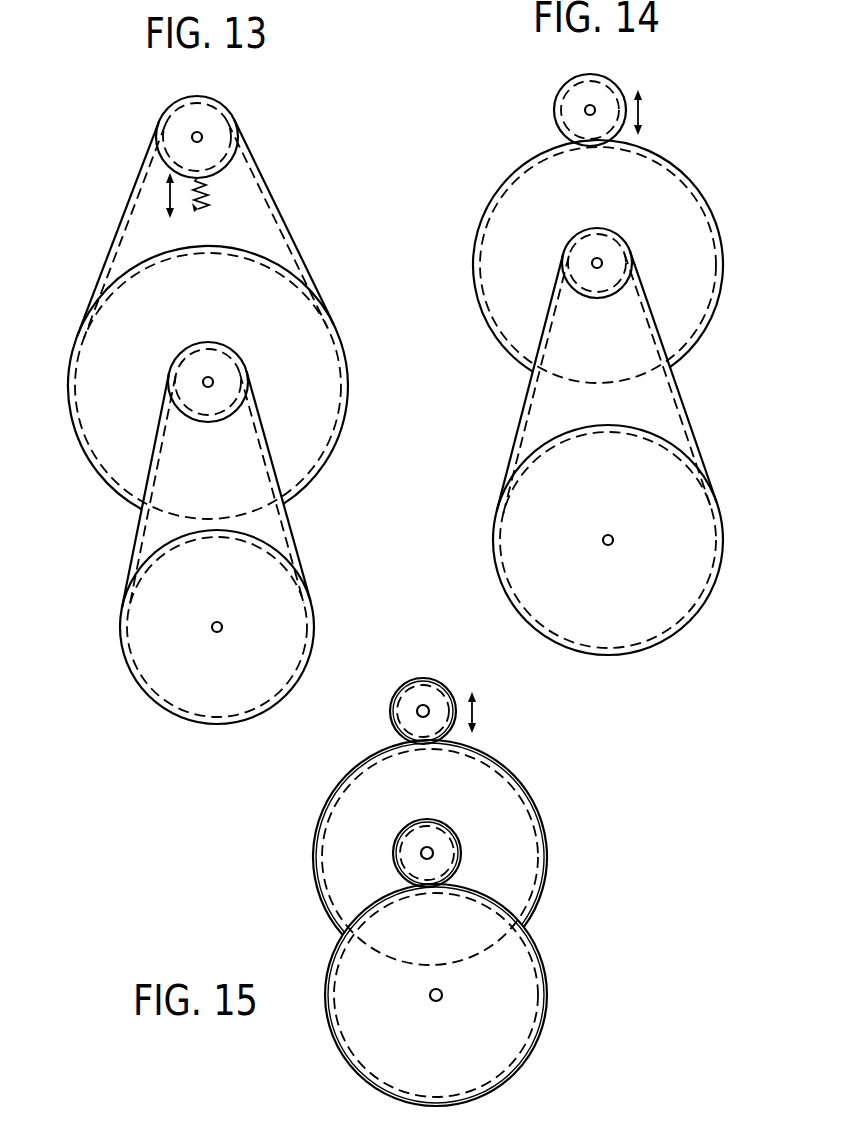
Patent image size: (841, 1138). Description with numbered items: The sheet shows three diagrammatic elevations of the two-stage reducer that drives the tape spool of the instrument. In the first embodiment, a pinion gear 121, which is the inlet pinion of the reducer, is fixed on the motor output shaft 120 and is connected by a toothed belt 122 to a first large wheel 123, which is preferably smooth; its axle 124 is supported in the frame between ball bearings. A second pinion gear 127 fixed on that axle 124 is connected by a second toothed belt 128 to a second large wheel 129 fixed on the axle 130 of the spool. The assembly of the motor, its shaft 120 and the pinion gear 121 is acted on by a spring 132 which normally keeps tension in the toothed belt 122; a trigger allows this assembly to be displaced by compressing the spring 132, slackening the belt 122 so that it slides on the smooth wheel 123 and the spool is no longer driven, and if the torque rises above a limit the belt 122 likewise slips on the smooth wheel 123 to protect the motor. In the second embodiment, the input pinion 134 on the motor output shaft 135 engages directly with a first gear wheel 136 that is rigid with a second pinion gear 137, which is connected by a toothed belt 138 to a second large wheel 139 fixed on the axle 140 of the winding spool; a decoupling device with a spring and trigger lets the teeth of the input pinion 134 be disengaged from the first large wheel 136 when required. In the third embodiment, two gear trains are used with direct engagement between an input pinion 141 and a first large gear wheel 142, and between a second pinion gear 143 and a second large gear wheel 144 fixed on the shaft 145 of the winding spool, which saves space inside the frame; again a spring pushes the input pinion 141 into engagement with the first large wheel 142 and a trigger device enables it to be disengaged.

In FIG. 13, the motor output shaft 120 is at (203, 137).
In FIG. 13, the pinion gear 121 is at (212, 97).
In FIG. 13, the toothed belt 122 is at (307, 260).
In FIG. 13, the first large wheel 123 is at (122, 272).
In FIG. 13, the axle 124 is at (214, 382).
In FIG. 13, the second pinion gear 127 is at (225, 342).
In FIG. 13, the second toothed belt 128 is at (137, 533).
In FIG. 13, the second large wheel 129 is at (123, 660).
In FIG. 13, the axle of the spool 130 is at (223, 625).
In FIG. 13, the spring 132 is at (207, 190).
In FIG. 14, the input pinion 134 is at (617, 80).
In FIG. 14, the output shaft of the motor 135 is at (585, 110).
In FIG. 14, the first gear wheel 136 is at (677, 227).
In FIG. 14, the second pinion gear 137 is at (577, 260).
In FIG. 14, the toothed belt 138 is at (682, 400).
In FIG. 14, the second large wheel 139 is at (663, 612).
In FIG. 14, the axle of the winding spool 140 is at (602, 540).
In FIG. 15, the input pinion 141 is at (425, 678).
In FIG. 15, the first large gear wheel 142 is at (512, 768).
In FIG. 15, the second pinion gear 143 is at (410, 837).
In FIG. 15, the second large gear wheel 144 is at (543, 955).
In FIG. 15, the shaft of the winding spool 145 is at (443, 995).